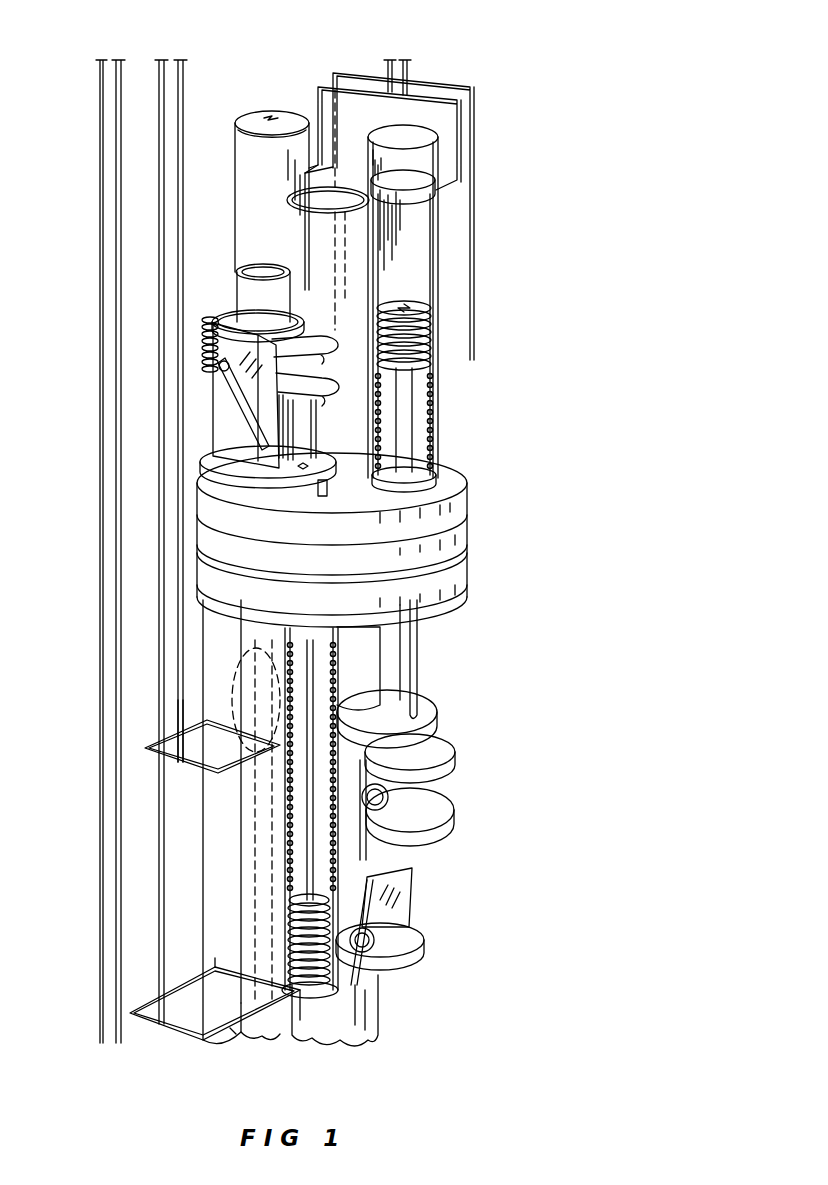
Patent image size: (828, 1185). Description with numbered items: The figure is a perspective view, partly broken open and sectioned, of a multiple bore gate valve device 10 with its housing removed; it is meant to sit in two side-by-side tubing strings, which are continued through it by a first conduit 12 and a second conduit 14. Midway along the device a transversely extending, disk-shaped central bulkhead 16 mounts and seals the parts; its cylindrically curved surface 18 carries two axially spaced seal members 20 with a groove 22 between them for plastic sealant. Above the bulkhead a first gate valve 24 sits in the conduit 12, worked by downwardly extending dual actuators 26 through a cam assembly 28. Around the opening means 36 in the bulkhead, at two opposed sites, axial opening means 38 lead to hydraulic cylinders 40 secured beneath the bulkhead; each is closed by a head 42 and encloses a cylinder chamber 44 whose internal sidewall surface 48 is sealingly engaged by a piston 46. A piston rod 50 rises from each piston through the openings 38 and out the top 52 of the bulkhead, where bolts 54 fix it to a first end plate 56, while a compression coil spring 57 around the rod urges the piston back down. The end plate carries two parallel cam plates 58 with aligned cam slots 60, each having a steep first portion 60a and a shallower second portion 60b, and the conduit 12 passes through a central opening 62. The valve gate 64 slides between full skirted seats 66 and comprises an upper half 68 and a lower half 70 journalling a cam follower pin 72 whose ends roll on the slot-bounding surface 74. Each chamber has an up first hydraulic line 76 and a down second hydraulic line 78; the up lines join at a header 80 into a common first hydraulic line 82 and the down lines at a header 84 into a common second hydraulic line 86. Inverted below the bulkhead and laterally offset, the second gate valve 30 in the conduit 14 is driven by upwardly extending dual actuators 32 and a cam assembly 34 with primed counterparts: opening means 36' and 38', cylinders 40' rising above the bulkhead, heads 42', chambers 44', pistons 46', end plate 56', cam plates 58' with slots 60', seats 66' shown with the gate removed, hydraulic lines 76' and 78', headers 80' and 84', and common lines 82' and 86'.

The multiple bore gate valve device 10 is at (588, 292).
The first conduit 12 is at (245, 291).
The second conduit 14 is at (296, 241).
The central bulkhead 16 is at (482, 578).
The cylindrically curved surface 18 is at (462, 506).
The seal members 20 is at (466, 527).
The groove 22 is at (468, 546).
The first gate valve 24 is at (210, 341).
The dual actuators 26 is at (260, 850).
The cam assembly 28 is at (245, 400).
The second gate valve 30 is at (462, 837).
The dual actuators 32 is at (332, 165).
The cam assembly 34 is at (430, 916).
The opening means 36 is at (297, 509).
The opening means 36' is at (363, 499).
The axial opening means 38 is at (333, 501).
The axial opening means 38' is at (440, 659).
The hydraulic cylinders 40 is at (316, 822).
The hydraulic cylinders 40' is at (358, 294).
The heads 42 is at (312, 1019).
The heads 42' is at (449, 193).
The cylinder chambers 44 is at (379, 812).
The cylinder chambers 44' is at (443, 343).
The piston 46 is at (269, 939).
The piston 46' is at (451, 335).
The internal sidewall surface 48 is at (442, 733).
The piston rod 50 is at (315, 668).
The top 52 is at (442, 468).
The bolts 54 is at (244, 492).
The first end plate 56 is at (230, 467).
The end plate 56' is at (431, 715).
The compression coil spring 57 is at (283, 765).
The cam plates 58 is at (237, 428).
The cam plates 58' is at (415, 967).
The cam slots 60 is at (198, 686).
The cam slots 60' is at (232, 818).
The first portion 60a is at (218, 392).
The second portion 60b is at (200, 419).
The central opening 62 is at (285, 445).
The valve gate 64 is at (207, 356).
The full skirted seats 66 is at (249, 350).
The full skirted seats 66' is at (441, 792).
The upper half 68 is at (205, 333).
The lower half 70 is at (317, 380).
The cam follower pin 72 is at (246, 395).
The slot-bounding surface 74 is at (243, 412).
The first hydraulic line 76 is at (210, 1026).
The first hydraulic line 76' is at (391, 127).
The second hydraulic line 78 is at (203, 744).
The second hydraulic line 78' is at (400, 198).
The header 80 is at (215, 1021).
The header 80' is at (417, 113).
The common first hydraulic line 82 is at (132, 530).
The common first hydraulic line 82' is at (380, 48).
The header 84 is at (152, 748).
The header 84' is at (436, 71).
The common second hydraulic line 86 is at (166, 530).
The common second hydraulic line 86' is at (429, 53).